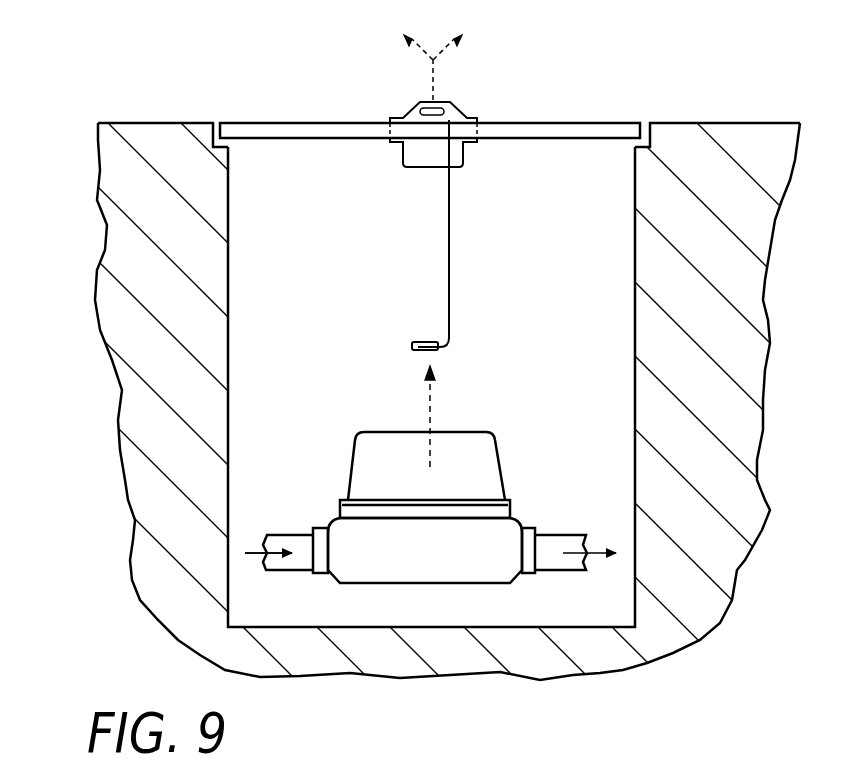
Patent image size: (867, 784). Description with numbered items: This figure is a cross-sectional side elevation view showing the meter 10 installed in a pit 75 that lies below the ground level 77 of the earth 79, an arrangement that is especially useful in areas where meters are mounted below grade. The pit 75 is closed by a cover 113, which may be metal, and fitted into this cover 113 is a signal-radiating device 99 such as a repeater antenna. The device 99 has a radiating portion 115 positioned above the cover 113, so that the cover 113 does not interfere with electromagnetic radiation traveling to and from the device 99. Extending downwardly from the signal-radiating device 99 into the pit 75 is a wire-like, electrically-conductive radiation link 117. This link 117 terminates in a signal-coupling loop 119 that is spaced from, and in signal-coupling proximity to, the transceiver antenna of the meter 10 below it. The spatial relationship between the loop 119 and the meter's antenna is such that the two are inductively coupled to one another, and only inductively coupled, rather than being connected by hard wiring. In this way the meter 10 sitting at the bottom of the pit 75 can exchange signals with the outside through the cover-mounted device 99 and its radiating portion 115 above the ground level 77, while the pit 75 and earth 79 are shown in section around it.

The meter 10 is at (329, 469).
The pit 75 is at (573, 608).
The ground level 77 is at (113, 123).
The earth 79 is at (150, 278).
The signal-radiating device 99 is at (396, 174).
The cover 113 is at (587, 130).
The radiating portion 115 is at (452, 105).
The radiation link 117 is at (450, 248).
The signal-coupling loop 119 is at (410, 345).